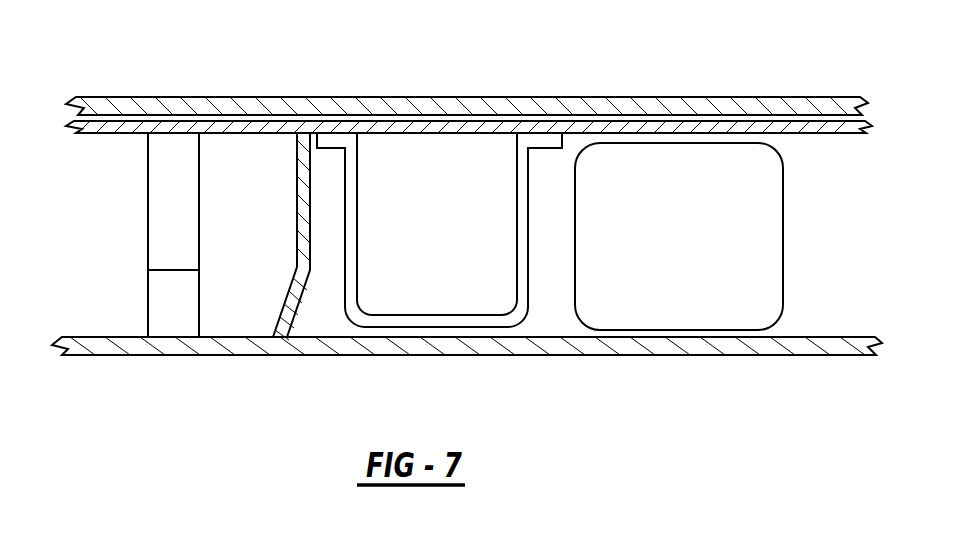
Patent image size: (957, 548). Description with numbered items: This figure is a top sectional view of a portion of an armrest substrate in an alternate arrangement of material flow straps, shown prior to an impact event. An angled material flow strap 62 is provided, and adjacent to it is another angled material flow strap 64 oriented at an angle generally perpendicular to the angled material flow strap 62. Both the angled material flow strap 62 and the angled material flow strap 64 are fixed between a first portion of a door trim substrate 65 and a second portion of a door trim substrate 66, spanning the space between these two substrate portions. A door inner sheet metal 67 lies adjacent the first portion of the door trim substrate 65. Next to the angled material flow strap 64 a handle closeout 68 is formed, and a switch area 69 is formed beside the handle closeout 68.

The angled material flow strap 62 is at (175, 153).
The angled material flow strap 64 is at (296, 186).
The first portion of a door trim substrate 65 is at (428, 128).
The second portion of a door trim substrate 66 is at (392, 355).
The door inner sheet metal 67 is at (545, 97).
The handle closeout 68 is at (527, 255).
The switch area 69 is at (742, 212).